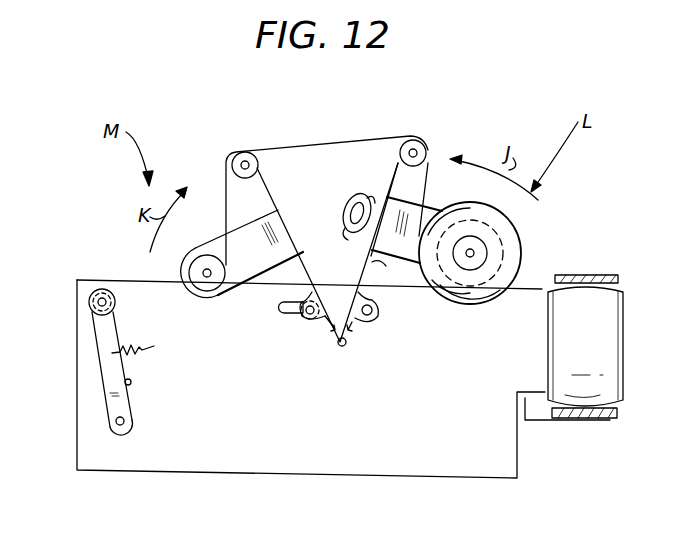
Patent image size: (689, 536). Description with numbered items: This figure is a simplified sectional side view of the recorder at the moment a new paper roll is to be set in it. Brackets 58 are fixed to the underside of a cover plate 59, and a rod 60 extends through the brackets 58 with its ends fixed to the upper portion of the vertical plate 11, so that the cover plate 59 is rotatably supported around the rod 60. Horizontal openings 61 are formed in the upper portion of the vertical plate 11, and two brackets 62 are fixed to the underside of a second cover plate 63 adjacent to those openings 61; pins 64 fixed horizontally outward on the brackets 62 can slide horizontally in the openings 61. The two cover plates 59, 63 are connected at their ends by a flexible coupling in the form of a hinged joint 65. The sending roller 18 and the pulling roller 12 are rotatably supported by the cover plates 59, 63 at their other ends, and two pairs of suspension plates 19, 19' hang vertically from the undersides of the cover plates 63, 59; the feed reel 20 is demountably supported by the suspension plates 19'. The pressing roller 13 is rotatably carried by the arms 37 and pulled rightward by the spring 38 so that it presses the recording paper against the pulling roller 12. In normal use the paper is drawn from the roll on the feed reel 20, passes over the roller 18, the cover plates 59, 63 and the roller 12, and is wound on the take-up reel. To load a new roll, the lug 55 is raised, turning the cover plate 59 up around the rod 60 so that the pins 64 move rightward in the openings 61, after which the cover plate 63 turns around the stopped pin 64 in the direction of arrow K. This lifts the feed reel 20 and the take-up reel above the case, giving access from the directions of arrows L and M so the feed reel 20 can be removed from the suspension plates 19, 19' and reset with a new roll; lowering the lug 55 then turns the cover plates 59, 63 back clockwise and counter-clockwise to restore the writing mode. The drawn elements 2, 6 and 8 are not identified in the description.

The electrode plate 2 is at (597, 275).
The plate 6 is at (338, 150).
The capacitor 8 is at (607, 346).
The vertical plate 11 is at (357, 462).
The pulling roller 12 is at (258, 165).
The pressing roller 13 is at (88, 301).
The sending roller 18 is at (400, 156).
The suspension plates 19 is at (242, 241).
The suspension plates 19' is at (406, 213).
The feed reel 20 is at (474, 262).
The arms 37 is at (110, 375).
The spring 38 is at (142, 350).
The lug 55 is at (348, 200).
The brackets 58 is at (377, 311).
The cover plate 59 is at (372, 266).
The rod 60 is at (372, 320).
The horizontal openings 61 is at (283, 304).
The brackets 62 is at (320, 320).
The cover plate 63 is at (310, 263).
The pins 64 is at (304, 314).
The hinged joint 65 is at (343, 345).